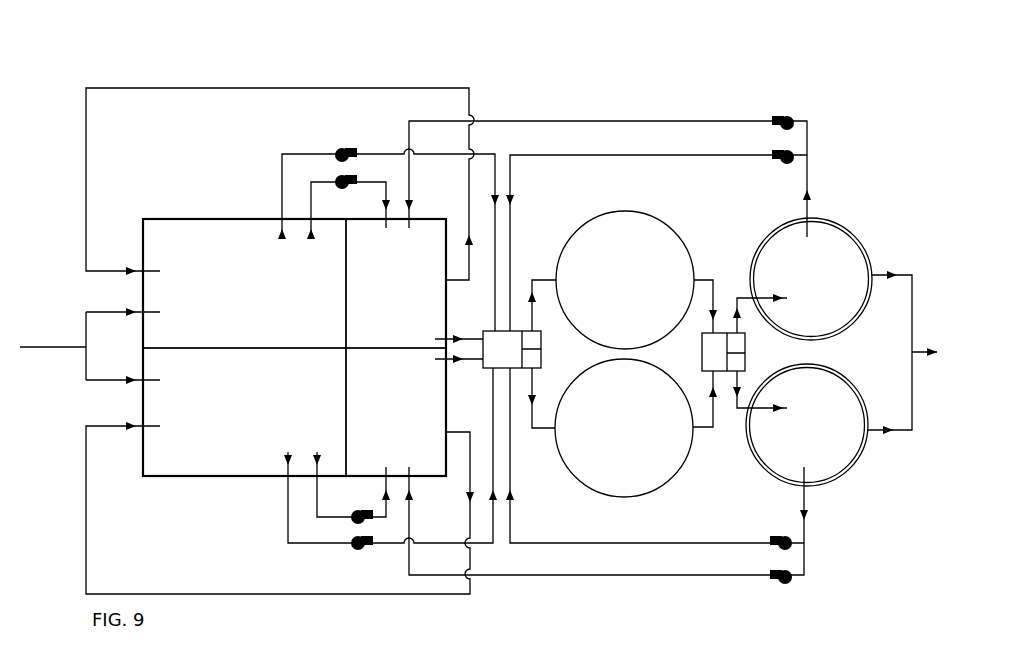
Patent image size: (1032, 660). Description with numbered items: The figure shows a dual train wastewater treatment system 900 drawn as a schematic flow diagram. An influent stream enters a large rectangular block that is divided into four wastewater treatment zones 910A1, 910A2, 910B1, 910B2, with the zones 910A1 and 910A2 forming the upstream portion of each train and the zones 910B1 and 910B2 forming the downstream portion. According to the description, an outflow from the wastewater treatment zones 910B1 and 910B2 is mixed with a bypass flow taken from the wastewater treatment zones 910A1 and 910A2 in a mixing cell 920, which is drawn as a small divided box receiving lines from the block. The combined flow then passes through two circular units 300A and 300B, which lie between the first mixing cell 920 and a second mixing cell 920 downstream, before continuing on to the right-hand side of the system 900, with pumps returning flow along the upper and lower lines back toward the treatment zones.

The dual train wastewater treatment system 900 is at (386, 82).
The wastewater treatment zone 910A1 is at (244, 283).
The wastewater treatment zone 910A2 is at (244, 412).
The wastewater treatment zone 910B1 is at (396, 283).
The wastewater treatment zone 910B2 is at (396, 412).
The mixing cell 920 is at (517, 331).
The thermal storage tank A 300A is at (625, 280).
The thermal storage tank B 300B is at (624, 428).